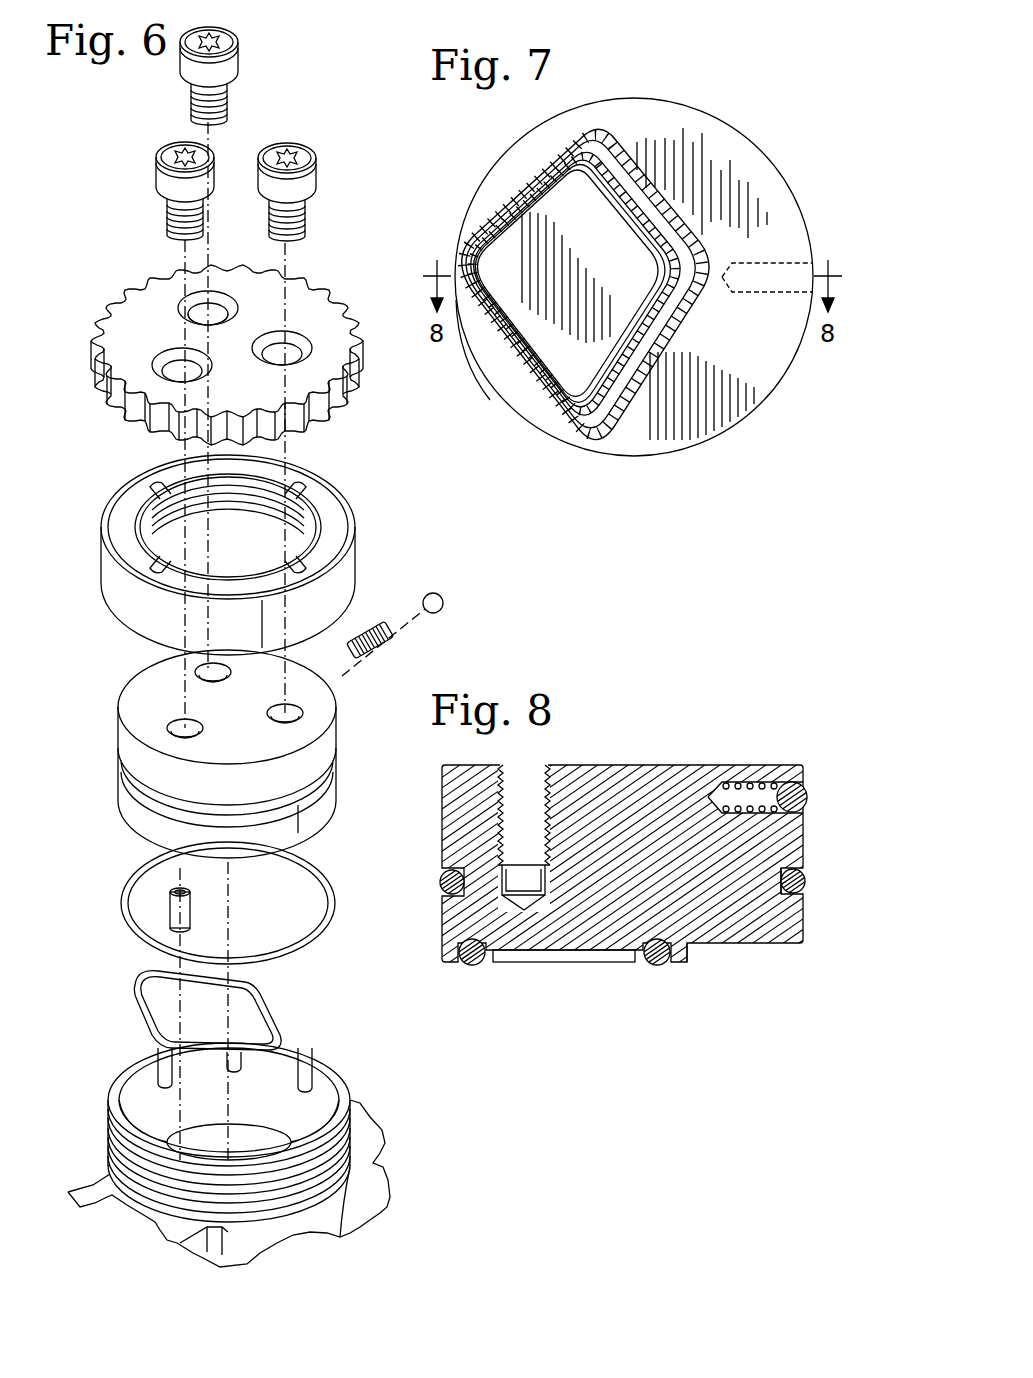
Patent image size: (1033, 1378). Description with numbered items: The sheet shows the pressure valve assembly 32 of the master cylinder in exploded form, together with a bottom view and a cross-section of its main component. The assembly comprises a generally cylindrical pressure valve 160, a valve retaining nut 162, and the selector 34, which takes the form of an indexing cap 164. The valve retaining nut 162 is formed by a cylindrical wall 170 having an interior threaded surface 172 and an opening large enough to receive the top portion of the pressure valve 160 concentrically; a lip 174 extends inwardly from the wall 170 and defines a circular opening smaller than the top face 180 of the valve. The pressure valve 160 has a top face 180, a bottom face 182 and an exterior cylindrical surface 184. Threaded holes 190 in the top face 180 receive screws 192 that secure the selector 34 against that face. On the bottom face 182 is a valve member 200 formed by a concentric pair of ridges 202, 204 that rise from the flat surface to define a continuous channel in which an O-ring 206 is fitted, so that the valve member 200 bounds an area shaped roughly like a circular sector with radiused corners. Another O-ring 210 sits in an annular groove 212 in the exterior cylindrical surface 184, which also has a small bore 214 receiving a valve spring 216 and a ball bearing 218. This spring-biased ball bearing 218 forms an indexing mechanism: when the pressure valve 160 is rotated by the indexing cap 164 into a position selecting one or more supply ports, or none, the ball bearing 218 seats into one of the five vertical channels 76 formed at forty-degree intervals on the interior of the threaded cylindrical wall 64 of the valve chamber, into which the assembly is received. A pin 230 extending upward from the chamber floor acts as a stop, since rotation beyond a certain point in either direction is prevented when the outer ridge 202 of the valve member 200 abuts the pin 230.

In FIG. 6, the pressure valve assembly 32 is at (88, 434).
In FIG. 6, the selector 34 is at (113, 277).
In FIG. 6, the cylindrical wall 64 is at (325, 1100).
In FIG. 6, the vertical channels 76 is at (300, 1072).
In FIG. 6, the pressure valve 160 is at (120, 736).
In FIG. 7, the pressure valve 160 is at (692, 110).
In FIG. 8, the pressure valve 160 is at (790, 766).
In FIG. 6, the valve retaining nut 162 is at (105, 542).
In FIG. 6, the indexing cap 164 is at (93, 357).
In FIG. 6, the cylindrical wall 170 is at (105, 572).
In FIG. 6, the interior threaded surface 172 is at (253, 512).
In FIG. 6, the lip 174 is at (306, 528).
In FIG. 6, the top face 180 is at (267, 756).
In FIG. 7, the bottom face 182 is at (771, 336).
In FIG. 6, the exterior cylindrical surface 184 is at (249, 804).
In FIG. 6, the threaded holes 190 is at (282, 712).
In FIG. 8, the threaded holes 190 is at (516, 784).
In FIG. 6, the screws 192 is at (287, 143).
In FIG. 7, the valve member 200 is at (480, 392).
In FIG. 7, the outer ridge 202 is at (598, 440).
In FIG. 8, the outer ridge 202 is at (688, 960).
In FIG. 7, the inner ridge 204 is at (583, 388).
In FIG. 8, the inner ridge 204 is at (638, 958).
In FIG. 6, the O-ring 206 is at (133, 990).
In FIG. 7, the O-ring 206 is at (612, 388).
In FIG. 8, the O-ring 206 is at (657, 965).
In FIG. 6, the O-ring 210 is at (297, 948).
In FIG. 8, the O-ring 210 is at (806, 882).
In FIG. 6, the annular groove 212 is at (338, 773).
In FIG. 8, the annular groove 212 is at (800, 890).
In FIG. 7, the small bore 214 is at (762, 262).
In FIG. 8, the small bore 214 is at (714, 792).
In FIG. 6, the valve spring 216 is at (388, 648).
In FIG. 8, the valve spring 216 is at (746, 784).
In FIG. 6, the ball bearing 218 is at (430, 595).
In FIG. 8, the ball bearing 218 is at (808, 797).
In FIG. 6, the pin 230 is at (170, 908).